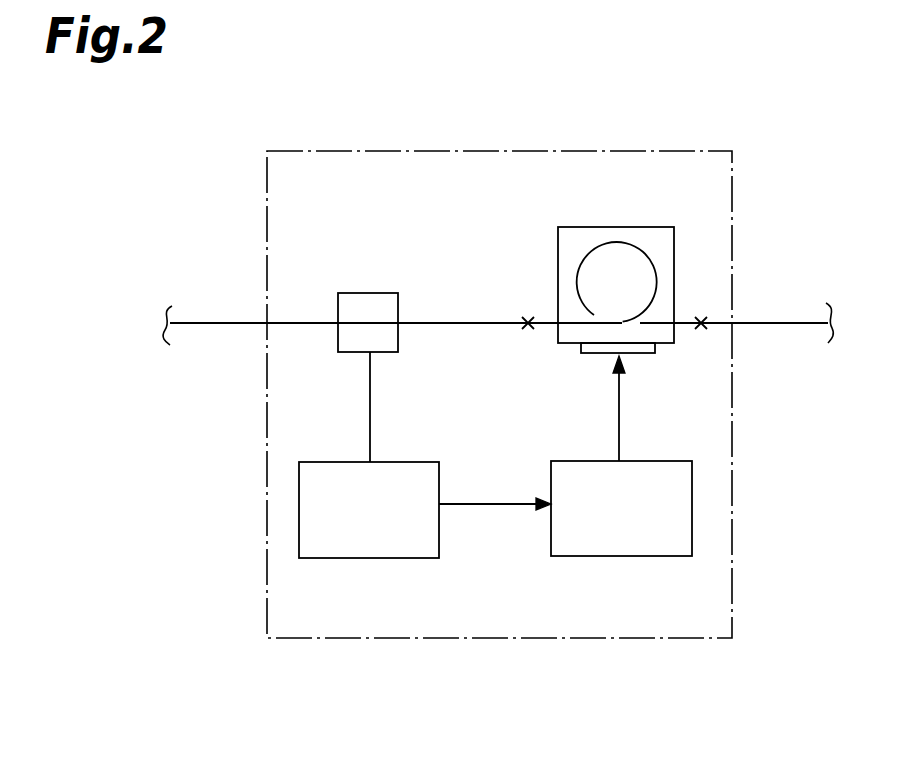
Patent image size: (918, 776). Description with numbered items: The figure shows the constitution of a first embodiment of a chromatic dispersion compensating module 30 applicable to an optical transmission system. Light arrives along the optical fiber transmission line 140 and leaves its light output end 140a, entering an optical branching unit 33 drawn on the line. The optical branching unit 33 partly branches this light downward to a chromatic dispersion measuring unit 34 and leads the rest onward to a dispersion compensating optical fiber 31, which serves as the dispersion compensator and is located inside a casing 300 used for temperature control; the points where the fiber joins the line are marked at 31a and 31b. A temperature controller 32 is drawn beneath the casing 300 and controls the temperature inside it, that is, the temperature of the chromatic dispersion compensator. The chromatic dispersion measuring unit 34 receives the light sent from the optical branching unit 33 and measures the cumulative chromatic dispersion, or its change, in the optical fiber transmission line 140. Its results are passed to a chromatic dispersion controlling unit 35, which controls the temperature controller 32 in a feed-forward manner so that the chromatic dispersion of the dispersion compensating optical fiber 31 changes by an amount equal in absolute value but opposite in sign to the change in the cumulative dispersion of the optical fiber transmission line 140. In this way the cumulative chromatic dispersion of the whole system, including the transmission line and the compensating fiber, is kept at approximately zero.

The chromatic dispersion compensating module 30 is at (514, 151).
The casing 300 is at (674, 255).
The dispersion compensating optical fiber 31 is at (617, 242).
The input connection point 31a is at (527, 319).
The output connection point 31b is at (703, 319).
The temperature controller 32 is at (638, 355).
The optical branching unit 33 is at (366, 293).
The chromatic dispersion measuring unit 34 is at (368, 558).
The chromatic dispersion controlling unit 35 is at (618, 556).
The optical fiber transmission line 140 is at (197, 323).
The light output end 140a is at (337, 326).